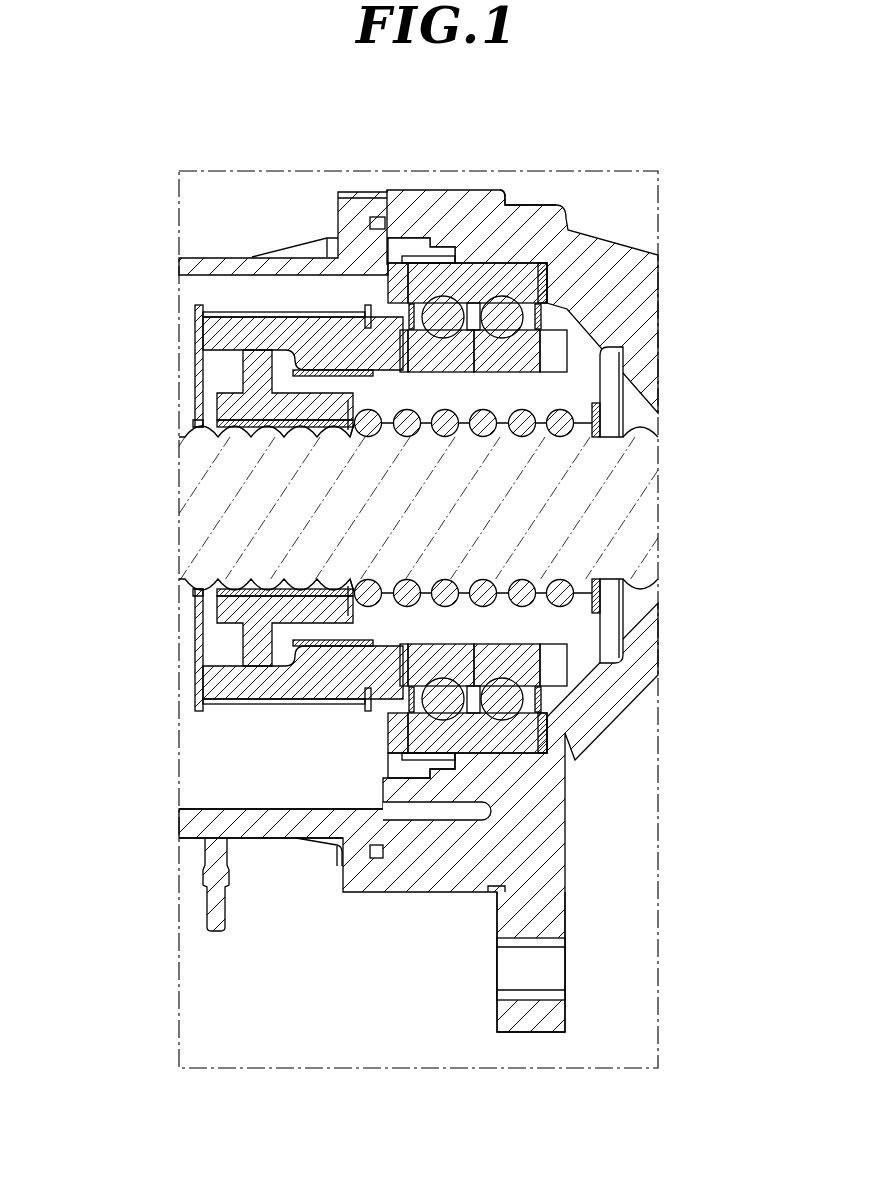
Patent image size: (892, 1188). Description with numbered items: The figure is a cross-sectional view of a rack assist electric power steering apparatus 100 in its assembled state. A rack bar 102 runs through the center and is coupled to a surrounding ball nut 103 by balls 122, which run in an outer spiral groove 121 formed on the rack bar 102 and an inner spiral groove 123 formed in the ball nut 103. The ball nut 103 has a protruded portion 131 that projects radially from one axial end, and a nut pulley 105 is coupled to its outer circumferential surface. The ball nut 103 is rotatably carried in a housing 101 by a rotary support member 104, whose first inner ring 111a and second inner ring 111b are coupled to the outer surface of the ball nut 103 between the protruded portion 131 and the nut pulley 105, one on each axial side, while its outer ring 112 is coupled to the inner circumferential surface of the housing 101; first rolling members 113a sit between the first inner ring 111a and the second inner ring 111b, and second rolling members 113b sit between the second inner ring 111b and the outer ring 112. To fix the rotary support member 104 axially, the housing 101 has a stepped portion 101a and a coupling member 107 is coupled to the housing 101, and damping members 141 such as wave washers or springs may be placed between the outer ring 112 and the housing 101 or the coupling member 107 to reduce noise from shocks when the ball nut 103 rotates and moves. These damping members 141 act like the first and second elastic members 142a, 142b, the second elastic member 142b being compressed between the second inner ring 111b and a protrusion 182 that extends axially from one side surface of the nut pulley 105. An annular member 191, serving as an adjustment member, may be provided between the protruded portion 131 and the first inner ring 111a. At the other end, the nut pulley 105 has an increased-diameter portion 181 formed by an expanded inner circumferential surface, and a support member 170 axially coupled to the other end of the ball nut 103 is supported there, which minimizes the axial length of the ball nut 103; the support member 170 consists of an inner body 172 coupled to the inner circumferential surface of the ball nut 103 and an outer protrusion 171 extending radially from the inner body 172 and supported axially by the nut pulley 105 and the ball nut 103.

The rack assist electric power steering apparatus 100 is at (120, 104).
The housing 101 is at (537, 198).
The stepped portion 101a is at (478, 215).
The rack bar 102 is at (205, 537).
The ball nut 103 is at (375, 628).
The rotary support member 104 is at (607, 492).
The nut pulley 105 is at (320, 332).
The coupling member 107 is at (473, 263).
The first inner ring 111a is at (530, 350).
The second inner ring 111b is at (470, 352).
The outer ring 112 is at (590, 256).
The first rolling members 113a is at (535, 280).
The second rolling members 113b is at (510, 317).
The outer spiral groove 121 is at (545, 580).
The balls 122 is at (556, 593).
The inner spiral groove 123 is at (612, 605).
The protruded portion 131 is at (560, 660).
The damping members 141 is at (420, 245).
The first elastic member 142a is at (572, 722).
The second elastic member 142b is at (403, 668).
The support member 170 is at (103, 340).
The outer protrusion 171 is at (262, 362).
The inner body 172 is at (282, 410).
The increased-diameter portion 181 is at (292, 335).
The protrusion 182 is at (368, 300).
The annular member 191 is at (480, 705).